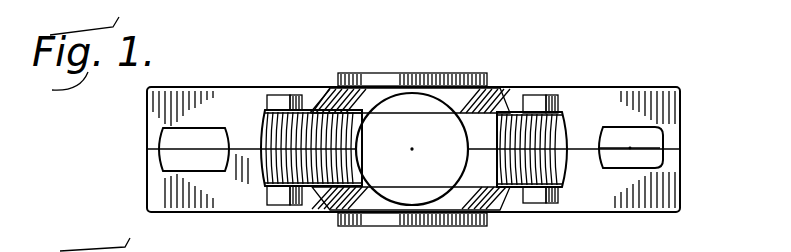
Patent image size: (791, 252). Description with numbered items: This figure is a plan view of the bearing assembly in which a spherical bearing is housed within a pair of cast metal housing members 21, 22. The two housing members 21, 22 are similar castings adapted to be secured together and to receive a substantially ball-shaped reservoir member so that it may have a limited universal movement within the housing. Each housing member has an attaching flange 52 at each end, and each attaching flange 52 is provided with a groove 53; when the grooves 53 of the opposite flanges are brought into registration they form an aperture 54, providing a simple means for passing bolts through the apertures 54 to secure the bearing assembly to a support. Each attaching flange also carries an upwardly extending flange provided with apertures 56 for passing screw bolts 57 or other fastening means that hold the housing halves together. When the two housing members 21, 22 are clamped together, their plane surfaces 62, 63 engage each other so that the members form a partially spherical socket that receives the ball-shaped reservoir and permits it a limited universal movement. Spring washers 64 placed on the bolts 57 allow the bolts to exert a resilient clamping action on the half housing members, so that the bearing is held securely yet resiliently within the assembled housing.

The cast metal housing member 21 is at (495, 118).
The cast metal housing member 22 is at (502, 212).
The attaching flange 52 is at (655, 95).
The groove 53 is at (617, 137).
The aperture 54 is at (647, 140).
The aperture 56 is at (563, 112).
The screw bolt 57 is at (548, 197).
The plane surface 62 is at (328, 147).
The plane surface 63 is at (242, 145).
The spring washer 64 is at (553, 102).